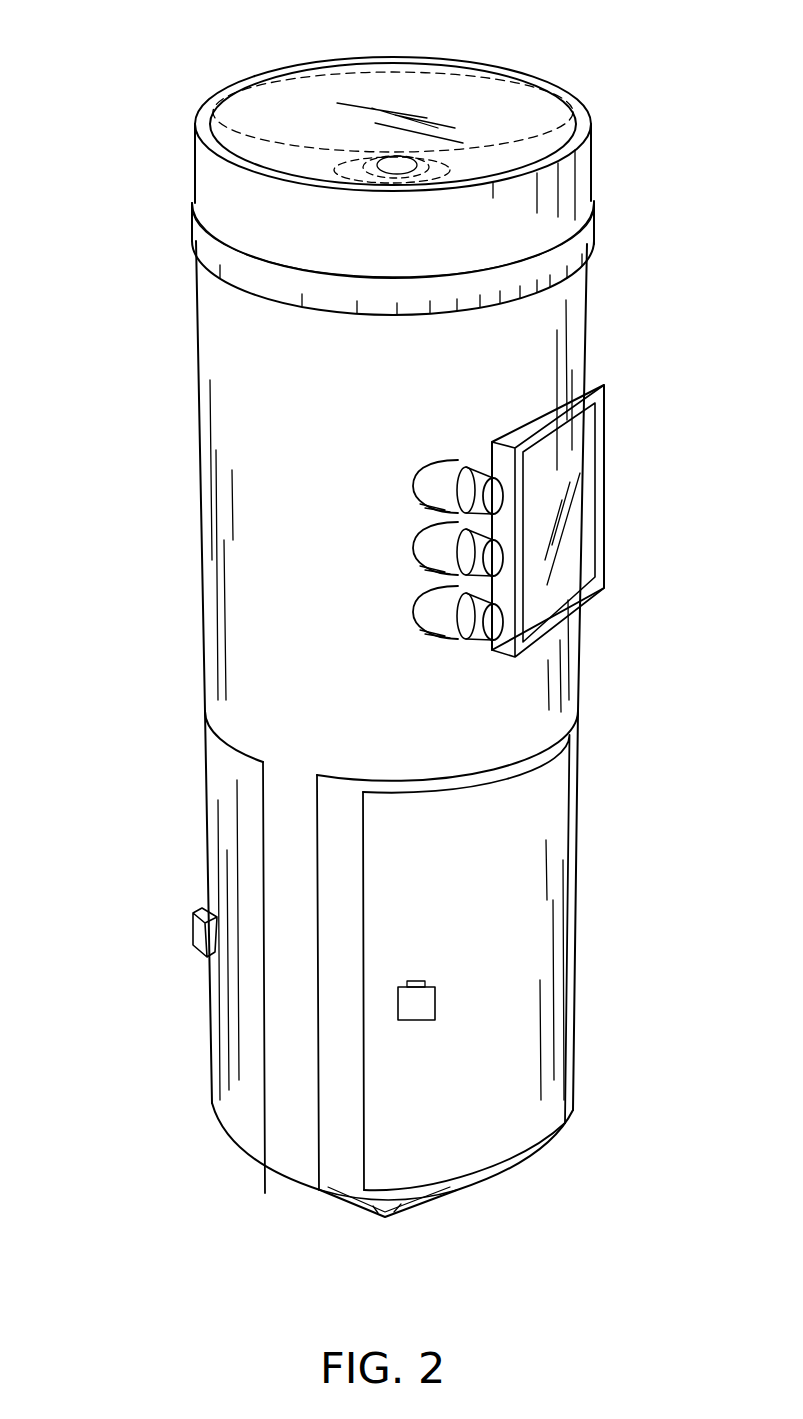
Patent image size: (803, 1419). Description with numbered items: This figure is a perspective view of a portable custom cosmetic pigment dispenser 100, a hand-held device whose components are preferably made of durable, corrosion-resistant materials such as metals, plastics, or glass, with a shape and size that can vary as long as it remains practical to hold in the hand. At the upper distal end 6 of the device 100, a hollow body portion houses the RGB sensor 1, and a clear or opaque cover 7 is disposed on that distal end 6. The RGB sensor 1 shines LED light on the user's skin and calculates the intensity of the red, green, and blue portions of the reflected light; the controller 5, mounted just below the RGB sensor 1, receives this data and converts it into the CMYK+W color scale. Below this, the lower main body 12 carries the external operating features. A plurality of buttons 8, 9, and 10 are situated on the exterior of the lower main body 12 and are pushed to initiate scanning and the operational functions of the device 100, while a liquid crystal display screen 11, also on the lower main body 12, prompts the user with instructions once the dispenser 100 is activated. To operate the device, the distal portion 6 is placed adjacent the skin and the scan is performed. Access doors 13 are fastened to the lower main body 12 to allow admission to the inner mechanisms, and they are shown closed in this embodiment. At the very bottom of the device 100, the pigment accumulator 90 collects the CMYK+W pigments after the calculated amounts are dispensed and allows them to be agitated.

The portable cosmetic pigment dispenser 100 is at (350, 634).
The RGB sensor 1 is at (410, 157).
The controller 5 is at (190, 228).
The distal end 6 is at (195, 158).
The cover 7 is at (480, 88).
The button 8 is at (496, 497).
The button 9 is at (496, 560).
The button 10 is at (496, 623).
The liquid crystal display screen 11 is at (588, 487).
The lower main body 12 is at (210, 318).
The access door 13 is at (537, 923).
The pigment accumulator 90 is at (387, 1213).